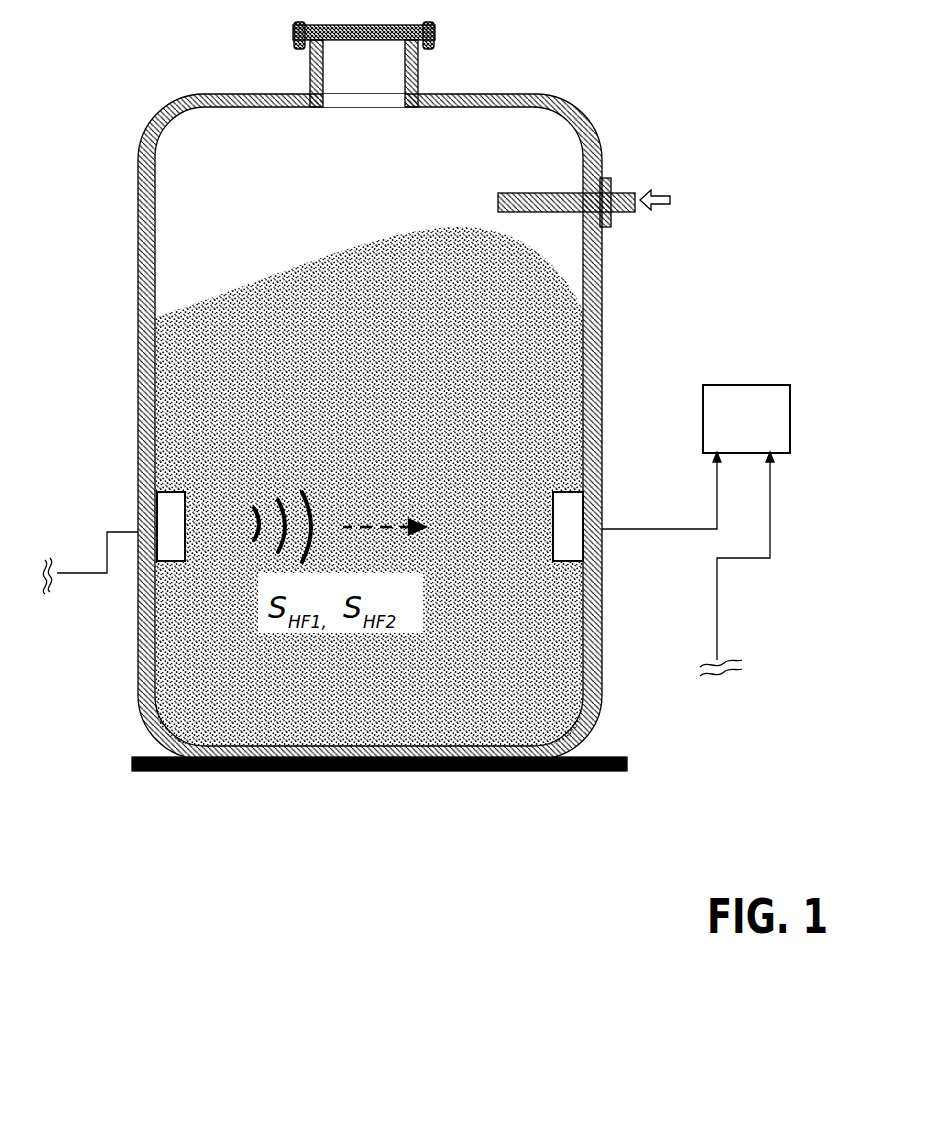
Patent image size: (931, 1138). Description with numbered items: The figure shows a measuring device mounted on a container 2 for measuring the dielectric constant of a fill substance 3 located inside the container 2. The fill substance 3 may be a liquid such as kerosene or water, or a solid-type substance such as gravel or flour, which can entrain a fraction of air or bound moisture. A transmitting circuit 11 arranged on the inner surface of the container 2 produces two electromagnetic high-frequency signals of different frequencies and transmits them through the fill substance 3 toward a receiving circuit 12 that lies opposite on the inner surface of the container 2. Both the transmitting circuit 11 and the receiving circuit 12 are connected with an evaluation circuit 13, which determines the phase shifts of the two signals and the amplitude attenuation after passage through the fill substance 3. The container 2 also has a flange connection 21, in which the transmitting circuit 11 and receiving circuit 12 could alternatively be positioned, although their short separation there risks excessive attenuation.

The container 2 is at (560, 100).
The flange connection 21 is at (310, 78).
The fill substance 3 is at (482, 325).
The transmitting circuit 11 is at (158, 517).
The receiving circuit 12 is at (560, 507).
The evaluation circuit 13 is at (727, 440).